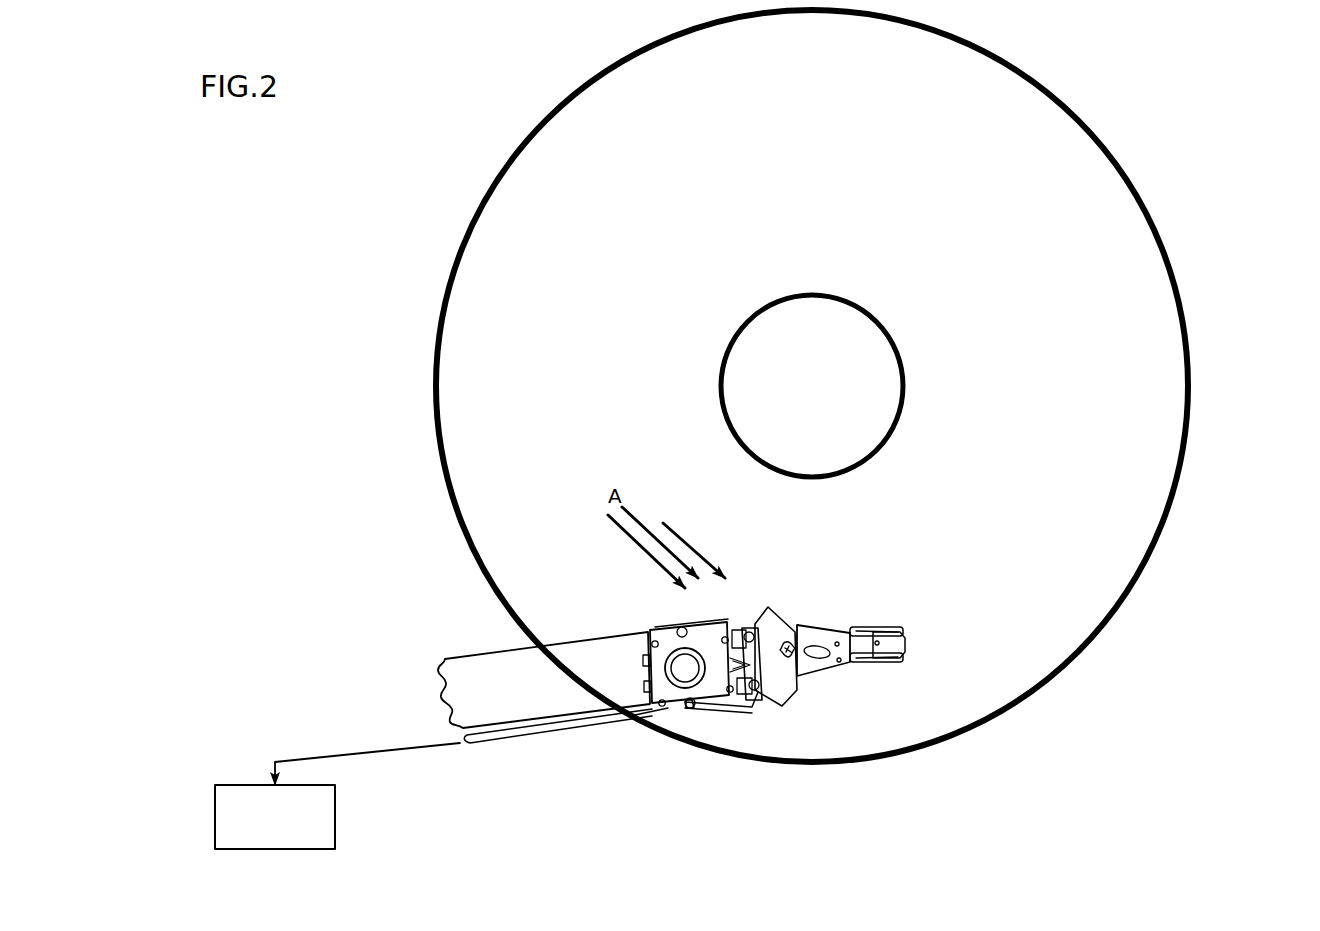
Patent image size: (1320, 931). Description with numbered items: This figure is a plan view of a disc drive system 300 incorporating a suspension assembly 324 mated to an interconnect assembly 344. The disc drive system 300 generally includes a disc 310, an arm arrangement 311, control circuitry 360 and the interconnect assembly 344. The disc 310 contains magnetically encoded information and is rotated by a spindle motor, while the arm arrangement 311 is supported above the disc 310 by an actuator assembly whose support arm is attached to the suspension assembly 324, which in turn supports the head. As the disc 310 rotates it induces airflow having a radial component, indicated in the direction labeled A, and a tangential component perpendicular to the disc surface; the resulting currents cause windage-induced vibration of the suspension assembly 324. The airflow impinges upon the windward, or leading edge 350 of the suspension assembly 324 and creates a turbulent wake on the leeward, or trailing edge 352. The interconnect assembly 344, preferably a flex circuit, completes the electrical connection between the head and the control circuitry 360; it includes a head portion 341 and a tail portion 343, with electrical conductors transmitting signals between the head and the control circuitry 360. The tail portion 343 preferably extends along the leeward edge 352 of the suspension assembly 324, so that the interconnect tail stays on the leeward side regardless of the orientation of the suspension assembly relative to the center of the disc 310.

The disc drive system 300 is at (1244, 183).
The disc 310 is at (1148, 408).
The arm arrangement 311 is at (462, 652).
The suspension assembly 324 is at (827, 622).
The head portion 341 is at (877, 663).
The tail portion 343 is at (673, 715).
The interconnect assembly 344 is at (757, 708).
The leading edge 350 is at (657, 630).
The trailing edge 352 is at (688, 708).
The control circuitry 360 is at (337, 800).